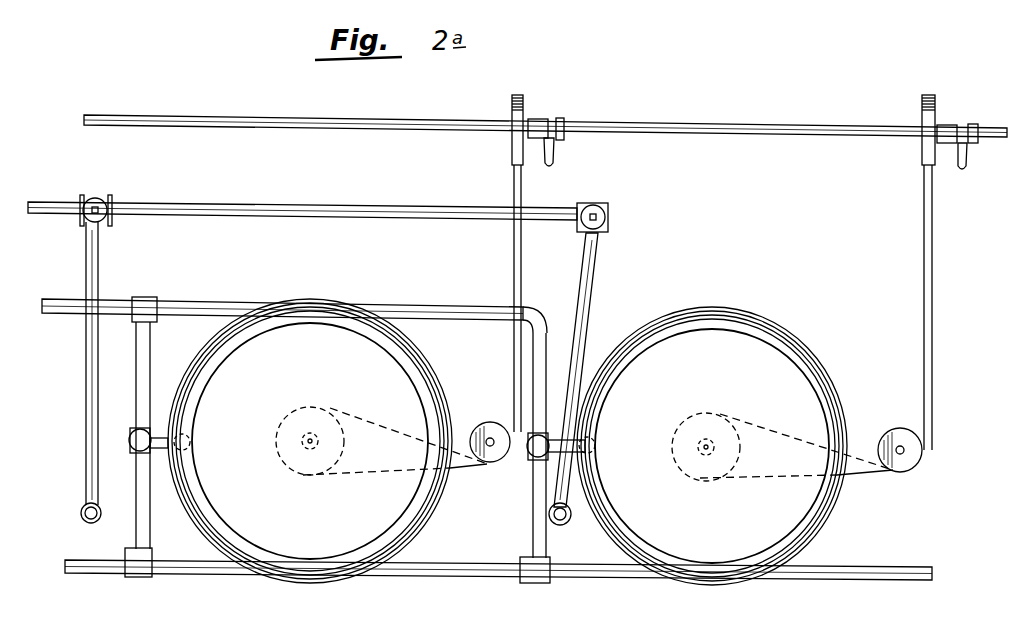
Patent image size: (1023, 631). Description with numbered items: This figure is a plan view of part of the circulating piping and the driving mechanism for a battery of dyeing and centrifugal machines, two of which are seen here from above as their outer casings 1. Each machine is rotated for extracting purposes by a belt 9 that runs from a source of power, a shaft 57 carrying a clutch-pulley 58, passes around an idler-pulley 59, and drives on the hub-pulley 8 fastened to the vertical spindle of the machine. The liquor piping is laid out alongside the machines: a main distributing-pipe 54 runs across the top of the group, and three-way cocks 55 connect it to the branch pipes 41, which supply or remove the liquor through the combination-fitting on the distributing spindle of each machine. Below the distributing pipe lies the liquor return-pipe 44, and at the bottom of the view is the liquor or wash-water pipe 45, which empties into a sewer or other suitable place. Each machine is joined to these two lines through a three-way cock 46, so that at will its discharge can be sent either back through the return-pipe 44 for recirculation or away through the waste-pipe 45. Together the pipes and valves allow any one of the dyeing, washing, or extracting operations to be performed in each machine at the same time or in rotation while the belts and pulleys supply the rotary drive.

The outer casing 1 is at (438, 391).
The hub-pulley 8 is at (300, 470).
The belt 9 is at (515, 375).
The pipe 41 is at (87, 372).
The liquor return-pipe 44 is at (231, 294).
The liquor or wash-water pipe 45 is at (858, 578).
The three-way cock 46 is at (130, 441).
The main distributing-pipe 54 is at (277, 195).
The three-way cock 55 is at (601, 206).
The shaft 57 is at (545, 116).
The clutch-pulley 58 is at (756, 128).
The idler-pulley 59 is at (492, 458).